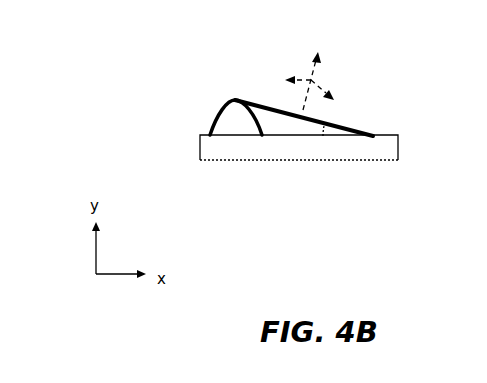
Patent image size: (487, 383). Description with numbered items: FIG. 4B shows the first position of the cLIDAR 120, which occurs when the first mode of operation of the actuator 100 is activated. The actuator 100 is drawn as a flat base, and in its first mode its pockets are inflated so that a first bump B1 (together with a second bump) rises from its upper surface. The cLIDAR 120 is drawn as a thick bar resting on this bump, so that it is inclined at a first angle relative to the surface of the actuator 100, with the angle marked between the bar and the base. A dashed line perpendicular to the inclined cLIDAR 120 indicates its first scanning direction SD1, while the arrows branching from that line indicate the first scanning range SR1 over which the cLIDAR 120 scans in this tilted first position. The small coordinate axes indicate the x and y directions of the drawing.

The actuator 100 is at (398, 150).
The cLIDAR 120 is at (357, 128).
The first bump B1 is at (216, 114).
The first scanning direction SD1 is at (319, 69).
The first scanning range SR1 is at (289, 84).